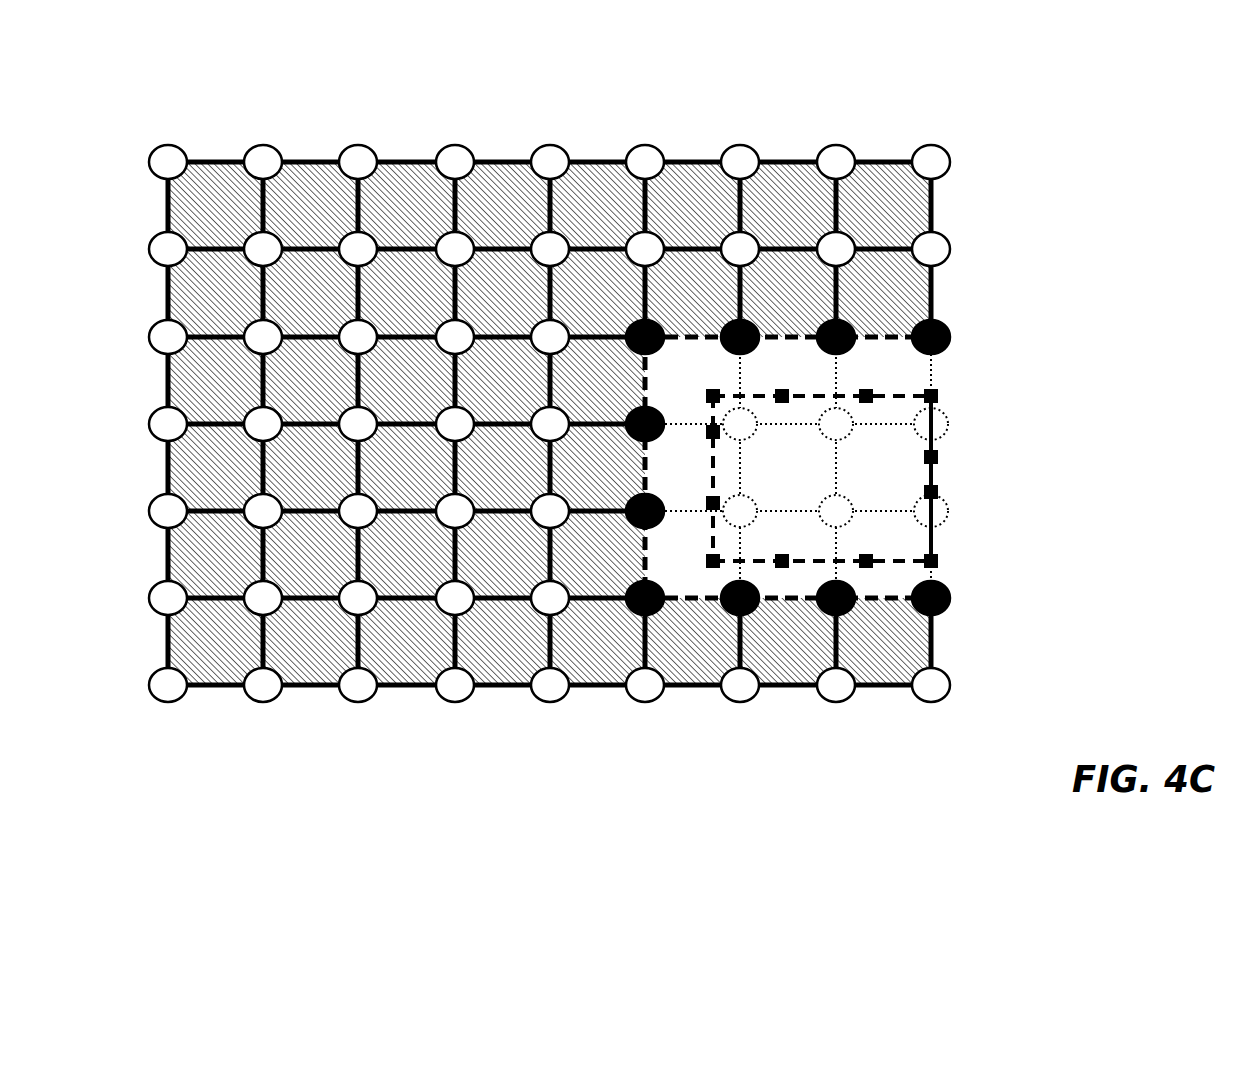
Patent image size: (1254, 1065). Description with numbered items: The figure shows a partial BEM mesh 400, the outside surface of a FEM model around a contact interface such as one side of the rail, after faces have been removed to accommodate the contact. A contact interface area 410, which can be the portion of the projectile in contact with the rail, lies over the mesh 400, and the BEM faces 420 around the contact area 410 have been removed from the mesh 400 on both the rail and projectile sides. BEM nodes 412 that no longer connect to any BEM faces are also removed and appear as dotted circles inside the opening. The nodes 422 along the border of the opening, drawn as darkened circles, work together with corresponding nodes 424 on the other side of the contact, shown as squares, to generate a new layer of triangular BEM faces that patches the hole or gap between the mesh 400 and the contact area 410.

The mesh 400 is at (619, 75).
The nodes 422 is at (934, 322).
The BEM faces 420 is at (934, 368).
The BEM nodes 412 is at (950, 423).
The contact interface area 410 is at (900, 490).
The corresponding nodes 424 is at (940, 557).